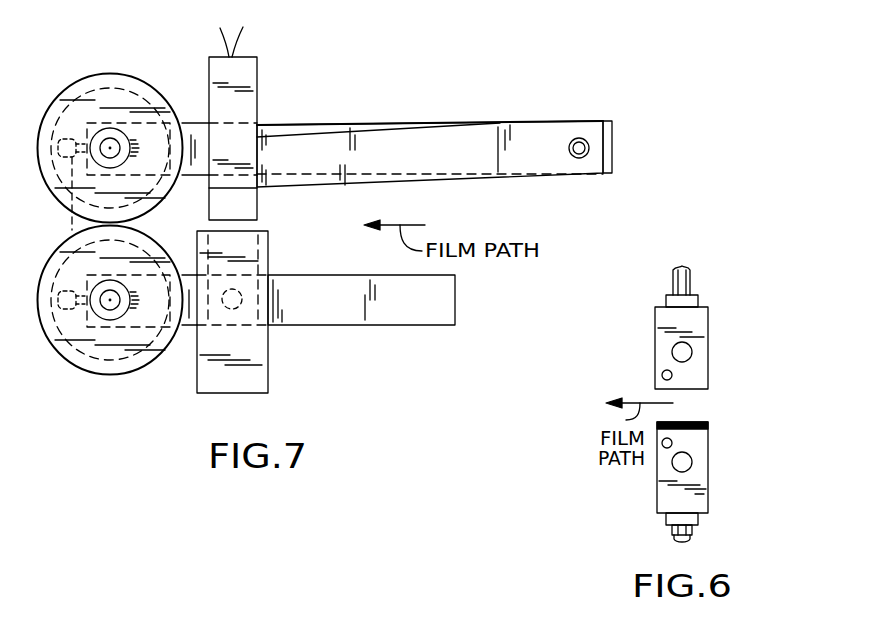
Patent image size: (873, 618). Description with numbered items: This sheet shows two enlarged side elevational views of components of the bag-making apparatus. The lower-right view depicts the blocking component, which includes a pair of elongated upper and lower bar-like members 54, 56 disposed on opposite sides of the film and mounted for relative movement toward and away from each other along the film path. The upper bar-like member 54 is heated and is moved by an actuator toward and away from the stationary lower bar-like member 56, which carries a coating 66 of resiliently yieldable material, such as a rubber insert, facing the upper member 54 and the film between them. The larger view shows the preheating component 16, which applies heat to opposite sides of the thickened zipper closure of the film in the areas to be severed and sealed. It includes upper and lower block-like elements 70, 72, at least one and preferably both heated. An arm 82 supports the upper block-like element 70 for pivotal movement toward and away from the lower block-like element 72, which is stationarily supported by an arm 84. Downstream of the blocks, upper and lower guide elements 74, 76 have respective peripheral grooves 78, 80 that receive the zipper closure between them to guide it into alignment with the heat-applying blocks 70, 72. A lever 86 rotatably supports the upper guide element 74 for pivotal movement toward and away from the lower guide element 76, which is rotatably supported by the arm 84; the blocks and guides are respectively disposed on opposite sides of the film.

In FIG. 7, the preheating component 16 is at (516, 102).
In FIG. 6, the upper bar-like member 54 is at (697, 320).
In FIG. 6, the lower bar-like member 56 is at (709, 484).
In FIG. 6, the coating 66 is at (709, 425).
In FIG. 7, the upper block-like element 70 is at (250, 201).
In FIG. 7, the lower block-like element 72 is at (263, 250).
In FIG. 7, the upper guide element 74 is at (88, 74).
In FIG. 7, the lower guide element 76 is at (157, 362).
In FIG. 7, the peripheral groove 78 is at (115, 82).
In FIG. 7, the peripheral groove 80 is at (90, 365).
In FIG. 7, the arm 82 is at (405, 133).
In FIG. 7, the arm 84 is at (343, 323).
In FIG. 7, the lever 86 is at (292, 125).